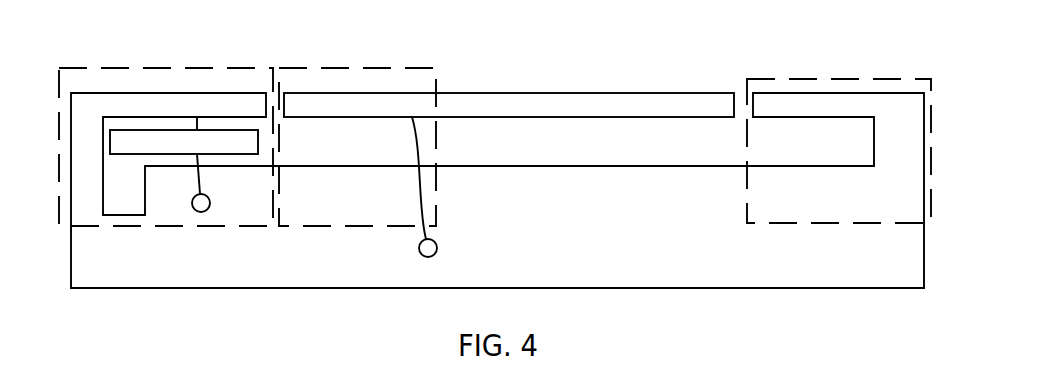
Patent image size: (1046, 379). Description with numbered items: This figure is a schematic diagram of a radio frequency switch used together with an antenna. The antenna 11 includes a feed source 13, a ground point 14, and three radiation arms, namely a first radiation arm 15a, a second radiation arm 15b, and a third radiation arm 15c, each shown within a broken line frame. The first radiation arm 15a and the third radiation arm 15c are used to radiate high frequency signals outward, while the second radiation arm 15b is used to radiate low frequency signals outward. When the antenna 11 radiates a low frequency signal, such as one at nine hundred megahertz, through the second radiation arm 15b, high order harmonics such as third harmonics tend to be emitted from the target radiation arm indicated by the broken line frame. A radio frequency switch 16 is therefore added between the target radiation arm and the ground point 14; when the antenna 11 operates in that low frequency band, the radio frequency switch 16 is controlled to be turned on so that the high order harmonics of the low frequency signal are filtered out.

The antenna 11 is at (631, 93).
The feed source 13 is at (438, 243).
The ground point 14 is at (211, 205).
The first radiation arm 15a is at (240, 93).
The second radiation arm 15b is at (385, 93).
The third radiation arm 15c is at (827, 92).
The radio frequency switch 16 is at (203, 128).